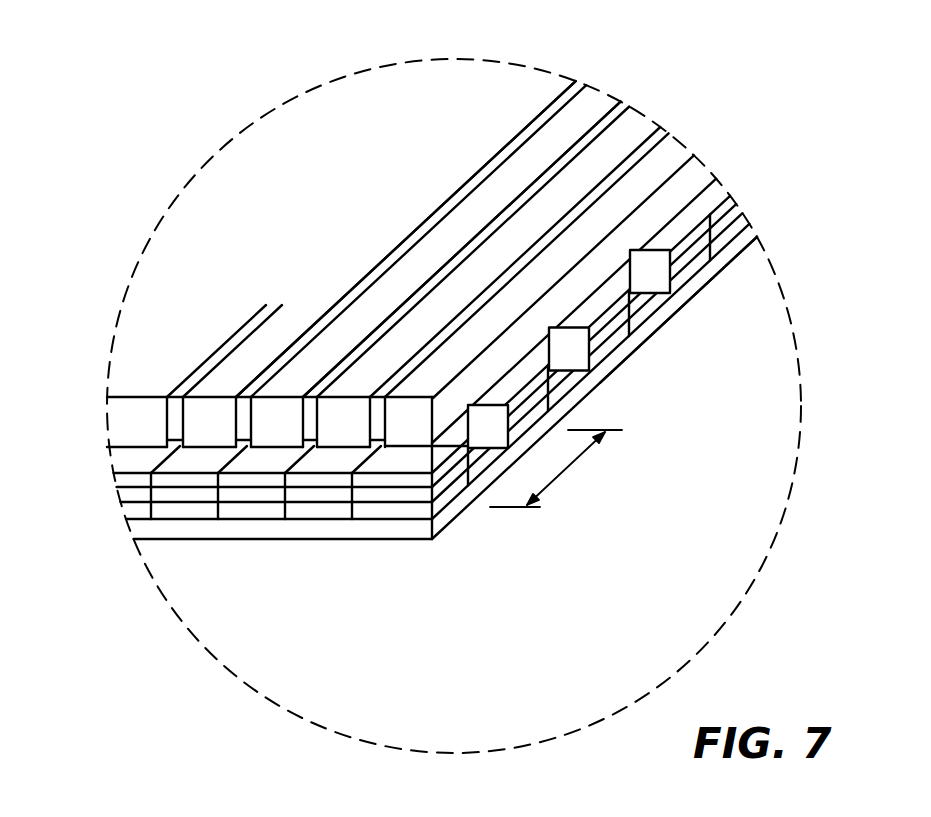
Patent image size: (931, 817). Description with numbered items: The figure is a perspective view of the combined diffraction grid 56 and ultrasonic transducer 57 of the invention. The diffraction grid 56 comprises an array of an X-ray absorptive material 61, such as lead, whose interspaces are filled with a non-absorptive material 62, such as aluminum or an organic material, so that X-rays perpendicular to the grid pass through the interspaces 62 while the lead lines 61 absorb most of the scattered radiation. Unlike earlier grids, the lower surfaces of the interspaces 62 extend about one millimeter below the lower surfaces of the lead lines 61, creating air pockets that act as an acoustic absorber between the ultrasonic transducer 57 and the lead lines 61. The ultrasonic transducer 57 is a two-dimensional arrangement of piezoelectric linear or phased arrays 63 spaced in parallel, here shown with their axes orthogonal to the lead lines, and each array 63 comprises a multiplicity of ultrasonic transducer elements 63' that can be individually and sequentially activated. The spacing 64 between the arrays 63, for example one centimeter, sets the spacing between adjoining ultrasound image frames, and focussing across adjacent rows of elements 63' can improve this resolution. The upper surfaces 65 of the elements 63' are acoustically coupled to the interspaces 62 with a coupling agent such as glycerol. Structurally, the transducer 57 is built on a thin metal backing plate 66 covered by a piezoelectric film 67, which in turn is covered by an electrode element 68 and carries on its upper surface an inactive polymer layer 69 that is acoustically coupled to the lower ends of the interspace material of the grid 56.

The diffraction grid 56 is at (313, 208).
The ultrasonic transducer 57 is at (748, 250).
The X-ray absorptive material 61 is at (606, 95).
The non-absorptive material 62 is at (638, 118).
The piezoelectric linear or phased arrays 63 is at (612, 350).
The ultrasonic transducer elements 63' is at (282, 526).
The spacing 64 is at (566, 469).
The upper surfaces 65 is at (719, 188).
The thin metal backing plate 66 is at (140, 527).
The piezoelectric film 67 is at (132, 512).
The electrode element 68 is at (125, 497).
The inactive polymer layer 69 is at (120, 482).